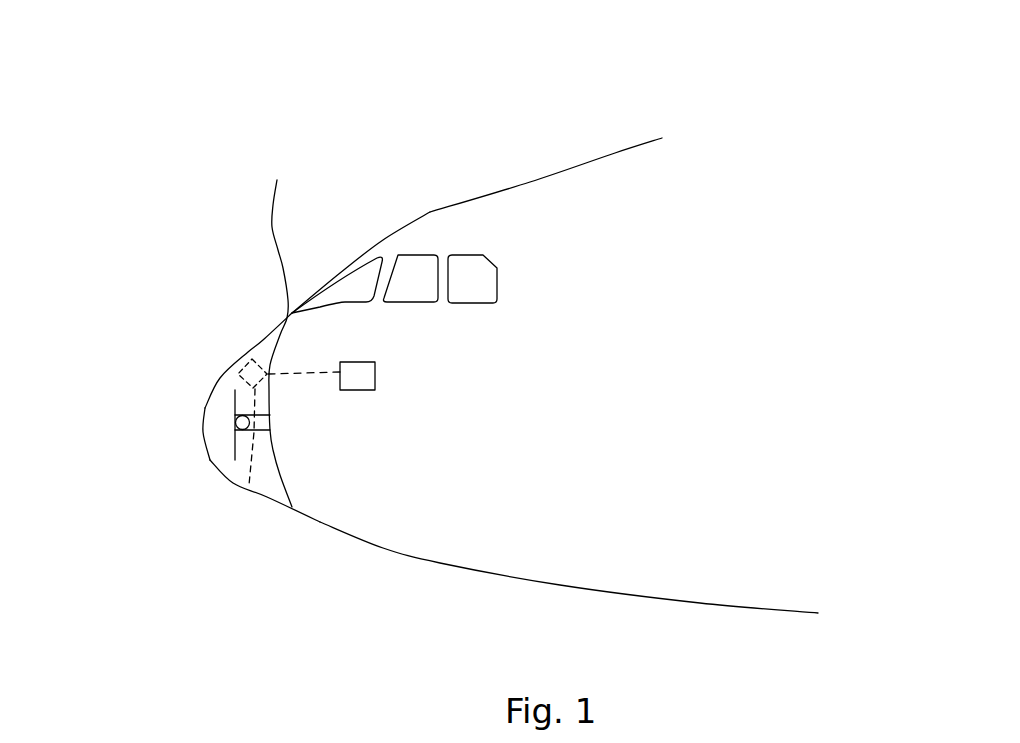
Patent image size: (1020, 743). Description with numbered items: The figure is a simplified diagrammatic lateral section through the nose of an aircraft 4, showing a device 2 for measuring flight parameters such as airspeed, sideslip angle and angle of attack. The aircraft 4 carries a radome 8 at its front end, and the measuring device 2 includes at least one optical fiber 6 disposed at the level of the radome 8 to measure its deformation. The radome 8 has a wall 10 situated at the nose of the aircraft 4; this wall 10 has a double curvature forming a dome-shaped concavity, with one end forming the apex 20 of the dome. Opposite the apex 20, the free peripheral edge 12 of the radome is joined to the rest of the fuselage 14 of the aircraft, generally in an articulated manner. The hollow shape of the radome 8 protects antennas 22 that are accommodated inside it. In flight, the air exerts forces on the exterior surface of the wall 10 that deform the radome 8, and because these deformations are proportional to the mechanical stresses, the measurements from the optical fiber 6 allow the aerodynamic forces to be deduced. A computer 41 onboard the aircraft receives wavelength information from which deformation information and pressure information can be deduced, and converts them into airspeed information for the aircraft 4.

The measuring device 2 is at (236, 349).
The aircraft 4 is at (430, 212).
The optical fiber 6 is at (254, 432).
The radome 8 is at (199, 406).
The wall 10 is at (210, 460).
The free peripheral edge 12 is at (280, 330).
The fuselage 14 is at (615, 150).
The apex 20 is at (203, 432).
The antennas 22 is at (233, 452).
The computer 41 is at (358, 382).